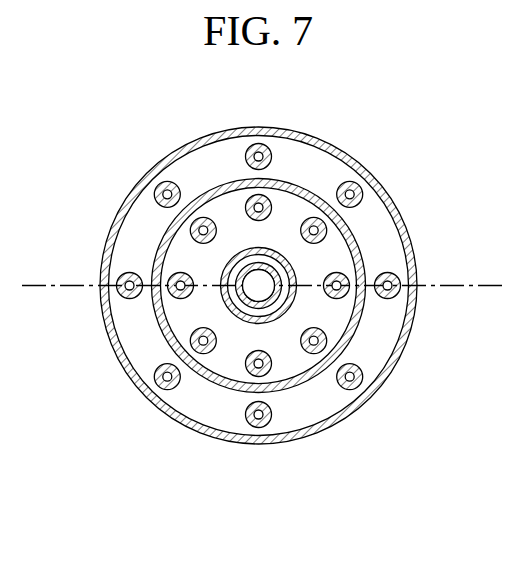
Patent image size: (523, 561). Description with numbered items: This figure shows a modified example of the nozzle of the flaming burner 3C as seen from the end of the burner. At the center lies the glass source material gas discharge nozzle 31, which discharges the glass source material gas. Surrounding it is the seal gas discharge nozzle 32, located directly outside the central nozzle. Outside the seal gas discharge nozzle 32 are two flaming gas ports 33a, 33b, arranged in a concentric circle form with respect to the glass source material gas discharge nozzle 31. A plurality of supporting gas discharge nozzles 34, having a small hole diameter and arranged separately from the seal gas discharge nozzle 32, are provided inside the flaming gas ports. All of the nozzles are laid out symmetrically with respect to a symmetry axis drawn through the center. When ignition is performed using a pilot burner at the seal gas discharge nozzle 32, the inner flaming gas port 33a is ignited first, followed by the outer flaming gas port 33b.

The flaming burner 3C is at (389, 142).
The flaming gas port 33a is at (332, 250).
The flaming gas port 33b is at (387, 243).
The supporting gas discharge nozzle 34 is at (336, 286).
The seal gas discharge nozzle 32 is at (285, 290).
The glass source material gas discharge nozzle 31 is at (260, 290).